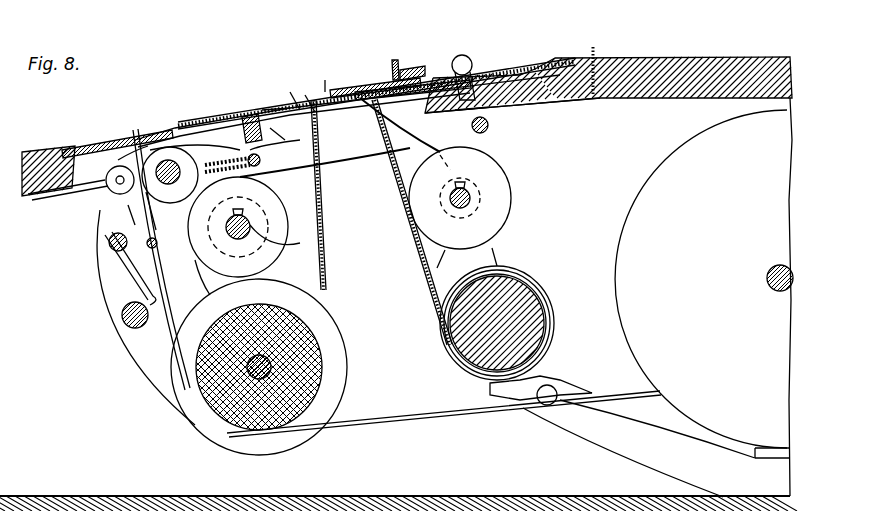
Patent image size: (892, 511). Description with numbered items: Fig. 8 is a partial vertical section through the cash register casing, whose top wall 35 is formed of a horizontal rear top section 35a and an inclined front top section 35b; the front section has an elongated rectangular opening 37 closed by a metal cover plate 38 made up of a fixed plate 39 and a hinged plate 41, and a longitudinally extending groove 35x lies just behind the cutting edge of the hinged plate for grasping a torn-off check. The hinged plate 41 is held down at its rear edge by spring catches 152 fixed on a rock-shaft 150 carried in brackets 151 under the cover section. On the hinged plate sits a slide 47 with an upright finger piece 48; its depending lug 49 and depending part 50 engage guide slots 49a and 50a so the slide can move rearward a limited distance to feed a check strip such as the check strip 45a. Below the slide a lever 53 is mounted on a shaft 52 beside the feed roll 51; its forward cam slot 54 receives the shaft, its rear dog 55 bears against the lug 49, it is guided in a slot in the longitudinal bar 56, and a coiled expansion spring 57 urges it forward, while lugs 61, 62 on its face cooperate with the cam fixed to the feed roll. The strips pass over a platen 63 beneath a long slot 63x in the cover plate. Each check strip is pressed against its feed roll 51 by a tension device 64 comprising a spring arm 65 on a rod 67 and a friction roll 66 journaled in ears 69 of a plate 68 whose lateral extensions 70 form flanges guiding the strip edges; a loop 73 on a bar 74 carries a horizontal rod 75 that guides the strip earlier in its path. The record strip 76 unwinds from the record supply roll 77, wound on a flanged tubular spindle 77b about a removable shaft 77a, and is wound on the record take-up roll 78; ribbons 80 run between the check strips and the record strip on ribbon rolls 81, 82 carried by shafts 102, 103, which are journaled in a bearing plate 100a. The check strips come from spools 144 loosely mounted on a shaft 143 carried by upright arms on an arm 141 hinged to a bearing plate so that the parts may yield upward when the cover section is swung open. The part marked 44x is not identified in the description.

The top wall 35 is at (33, 151).
The rear top section 35a is at (677, 57).
The front top section 35b is at (62, 196).
The longitudinally extending groove 35x is at (545, 66).
The elongated rectangular opening 37 is at (492, 112).
The cover plate 38 is at (216, 110).
The fixed plate 39 is at (80, 149).
The hinged plate 41 is at (212, 120).
The stop pin 44x is at (480, 62).
The check strip 45a is at (444, 414).
The slide 47 is at (292, 92).
The finger piece 48 is at (393, 60).
The lug 49 is at (262, 112).
The guide slot 49a is at (276, 108).
The depending part 50 is at (378, 84).
The guide slot 50a is at (405, 72).
The feed roll 51 is at (194, 275).
The shaft 52 is at (169, 191).
The lever 53 is at (300, 140).
The cam slot 54 is at (120, 158).
The dog 55 is at (310, 100).
The longitudinal bar 56 is at (275, 172).
The coiled expansion spring 57 is at (262, 165).
The lug 61 is at (160, 150).
The lug 62 is at (238, 226).
The platen 63 is at (362, 102).
The long slot 63x is at (322, 78).
The tension device 64 is at (125, 222).
The spring arm 65 is at (162, 292).
The friction roll 66 is at (117, 178).
The rod 67 is at (108, 243).
The plate 68 is at (135, 212).
The ears 69 is at (106, 179).
The lateral extensions 70 is at (165, 217).
The loop 73 is at (135, 290).
The bar 74 is at (122, 315).
The horizontal rod 75 is at (147, 248).
The record strip 76 is at (321, 265).
The record supply roll 77 is at (290, 345).
The shaft 77a is at (272, 367).
The flanged tubular spindle 77b is at (305, 320).
The record take-up roll 78 is at (458, 372).
The ribbons 80 is at (346, 221).
The ribbon roll 81 is at (252, 226).
The ribbon roll 82 is at (475, 195).
The bearing plate 100a is at (490, 258).
The shaft 102 is at (302, 243).
The shaft 103 is at (470, 205).
The arm 141 is at (595, 432).
The shaft 143 is at (768, 292).
The spools 144 is at (637, 198).
The rock-shaft 150 is at (490, 133).
The brackets 151 is at (518, 119).
The spring catches 152 is at (462, 56).